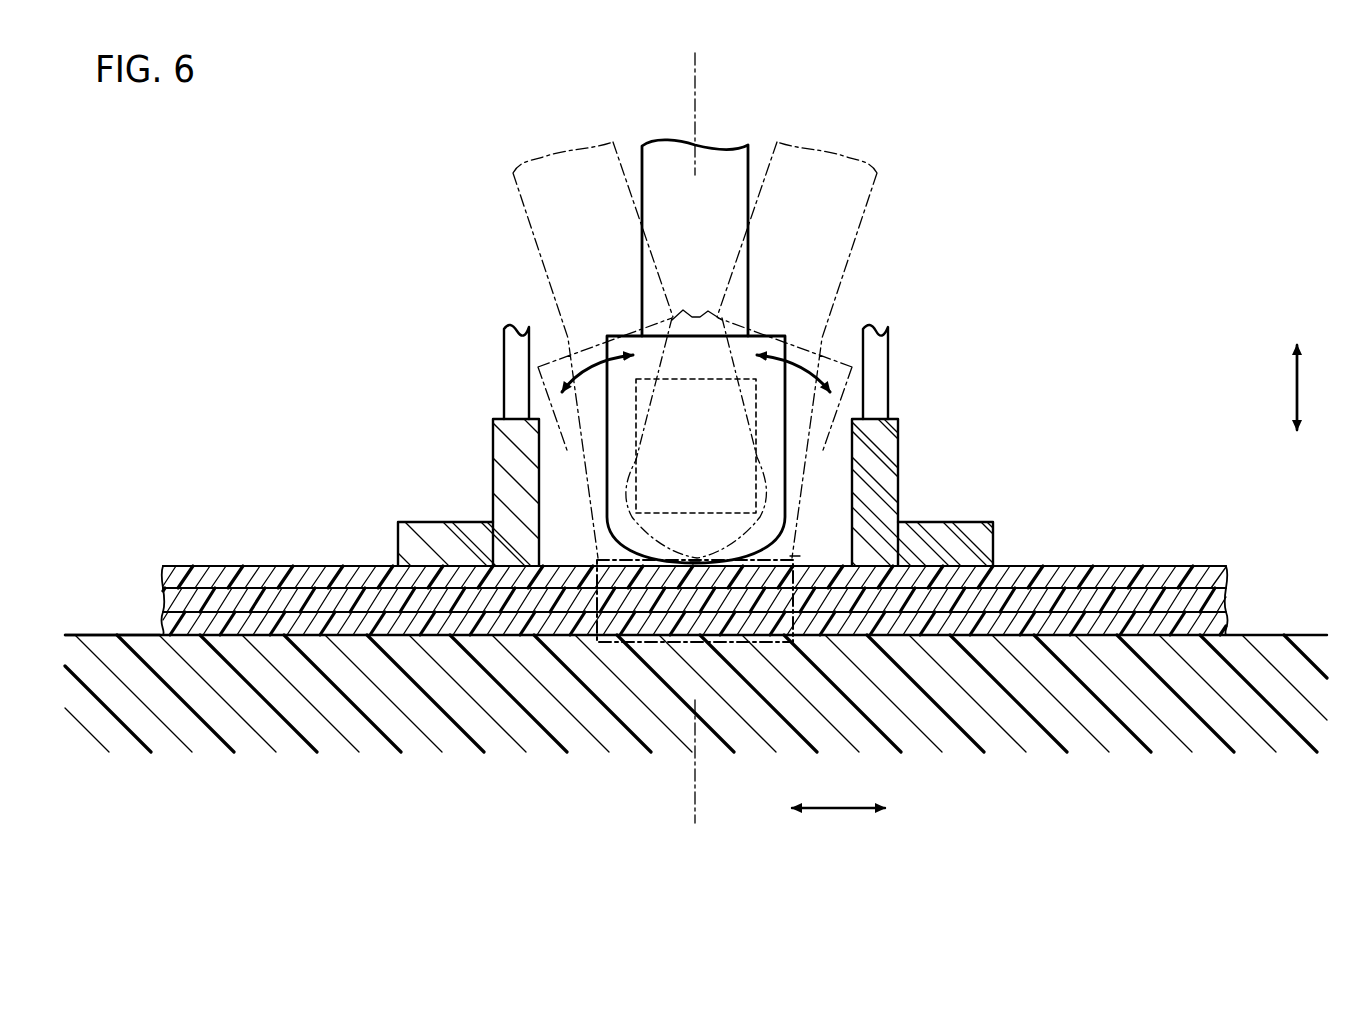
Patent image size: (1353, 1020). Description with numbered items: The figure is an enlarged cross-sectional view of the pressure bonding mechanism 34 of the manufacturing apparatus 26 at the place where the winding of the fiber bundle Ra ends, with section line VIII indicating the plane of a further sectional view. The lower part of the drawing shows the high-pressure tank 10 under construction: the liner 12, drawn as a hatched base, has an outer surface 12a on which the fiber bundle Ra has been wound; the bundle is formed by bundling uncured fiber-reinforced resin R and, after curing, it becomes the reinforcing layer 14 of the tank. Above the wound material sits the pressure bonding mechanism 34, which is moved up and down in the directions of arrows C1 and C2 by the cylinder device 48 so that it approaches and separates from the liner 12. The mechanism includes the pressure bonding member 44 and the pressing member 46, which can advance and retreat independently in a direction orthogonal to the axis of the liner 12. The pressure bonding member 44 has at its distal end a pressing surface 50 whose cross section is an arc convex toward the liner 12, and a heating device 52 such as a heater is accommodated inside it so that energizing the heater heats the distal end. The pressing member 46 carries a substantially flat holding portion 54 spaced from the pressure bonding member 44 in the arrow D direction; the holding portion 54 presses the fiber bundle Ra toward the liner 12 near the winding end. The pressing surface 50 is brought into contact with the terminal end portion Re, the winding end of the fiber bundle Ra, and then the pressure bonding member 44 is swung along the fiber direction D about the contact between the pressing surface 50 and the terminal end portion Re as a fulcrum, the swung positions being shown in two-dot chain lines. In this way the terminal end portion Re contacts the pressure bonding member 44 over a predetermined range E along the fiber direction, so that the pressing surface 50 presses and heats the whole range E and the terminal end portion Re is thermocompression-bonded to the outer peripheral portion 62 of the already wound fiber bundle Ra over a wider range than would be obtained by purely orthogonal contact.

The high-pressure tank 10 is at (1205, 545).
The liner 12 is at (1267, 654).
The outer surface 12a is at (108, 635).
The reinforcing layer 14 is at (338, 558).
The manufacturing apparatus 26 is at (296, 196).
The pressure bonding mechanism 34 is at (760, 131).
The pressure bonding member 44 is at (566, 453).
The pressing member 46 is at (456, 470).
The cylinder device 48 is at (718, 162).
The pressing surface 50 is at (695, 567).
The heating device 52 is at (702, 379).
The holding portion 54 is at (433, 535).
The outer peripheral portion 62 is at (1177, 590).
The fiber reinforced resin R is at (1101, 618).
The fiber bundle Ra is at (243, 577).
The terminal end portion Re is at (799, 551).
The predetermined range E is at (598, 643).
The arrow C1 direction C1 is at (1297, 405).
The arrow C2 direction C2 is at (1297, 371).
The arrow D direction D is at (838, 793).
The section line VIII is at (688, 67).